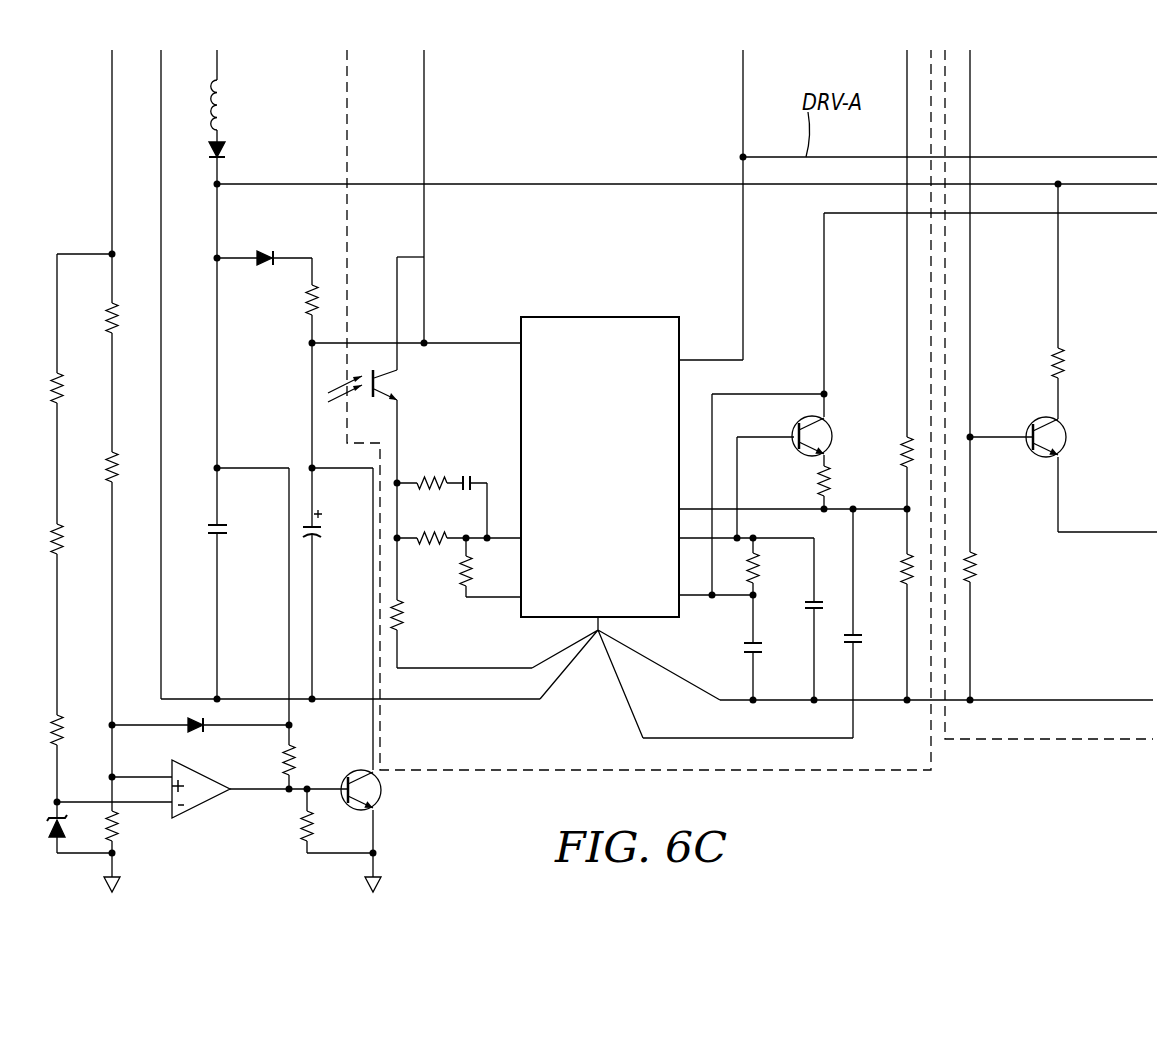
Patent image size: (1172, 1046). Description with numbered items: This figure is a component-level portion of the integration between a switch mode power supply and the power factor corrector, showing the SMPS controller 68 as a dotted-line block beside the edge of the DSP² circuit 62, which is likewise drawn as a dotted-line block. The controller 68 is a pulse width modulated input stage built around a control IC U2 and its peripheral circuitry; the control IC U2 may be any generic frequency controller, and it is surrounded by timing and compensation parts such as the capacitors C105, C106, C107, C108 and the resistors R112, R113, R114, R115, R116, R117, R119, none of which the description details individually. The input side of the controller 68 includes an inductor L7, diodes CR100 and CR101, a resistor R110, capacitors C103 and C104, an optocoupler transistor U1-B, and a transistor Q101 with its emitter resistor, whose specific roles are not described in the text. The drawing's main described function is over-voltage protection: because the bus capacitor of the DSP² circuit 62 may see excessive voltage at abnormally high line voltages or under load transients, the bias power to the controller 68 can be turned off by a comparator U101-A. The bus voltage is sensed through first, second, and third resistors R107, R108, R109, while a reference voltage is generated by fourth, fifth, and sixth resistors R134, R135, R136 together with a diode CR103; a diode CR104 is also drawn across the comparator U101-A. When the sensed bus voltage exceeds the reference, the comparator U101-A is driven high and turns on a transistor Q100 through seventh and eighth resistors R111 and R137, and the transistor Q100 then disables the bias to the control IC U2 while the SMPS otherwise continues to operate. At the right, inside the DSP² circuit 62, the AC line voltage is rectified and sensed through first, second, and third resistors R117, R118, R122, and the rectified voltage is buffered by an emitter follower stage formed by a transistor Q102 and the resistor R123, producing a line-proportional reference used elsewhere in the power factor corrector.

The controller for the SMPS 68 is at (488, 770).
The DSP² circuit 62 is at (1058, 740).
The control IC U2 is at (600, 467).
The comparator U101-A is at (208, 793).
The optocoupler transistor U1-B is at (385, 383).
The transistor Q100 is at (379, 796).
The transistor Q101 is at (831, 429).
The transistor Q102 is at (1028, 430).
The inductor L7 is at (226, 105).
The diode CR100 is at (241, 153).
The diode CR101 is at (265, 243).
The diode CR103 is at (34, 829).
The diode CR104 is at (197, 739).
The capacitor C103 is at (198, 531).
The capacitor C104 is at (332, 527).
The capacitor C105 is at (467, 470).
The capacitor C106 is at (735, 648).
The capacitor C107 is at (795, 602).
The capacitor C108 is at (871, 639).
The first resistor R107 is at (91, 318).
The second resistor R108 is at (130, 467).
The third resistor R109 is at (130, 826).
The resistor R110 is at (293, 300).
The seventh resistor R111 is at (307, 760).
The resistor R112 is at (415, 615).
The resistor R113 is at (432, 495).
The resistor R114 is at (432, 551).
The resistor R115 is at (486, 572).
The resistor R116 is at (772, 568).
The first resistor R117 is at (844, 481).
The second resistor R118 is at (887, 452).
The resistor R119 is at (887, 569).
The third resistor R122 is at (988, 567).
The resistor R123 is at (1038, 362).
The fourth resistor R134 is at (76, 389).
The fifth resistor R135 is at (76, 540).
The sixth resistor R136 is at (76, 730).
The eighth resistor R137 is at (324, 826).